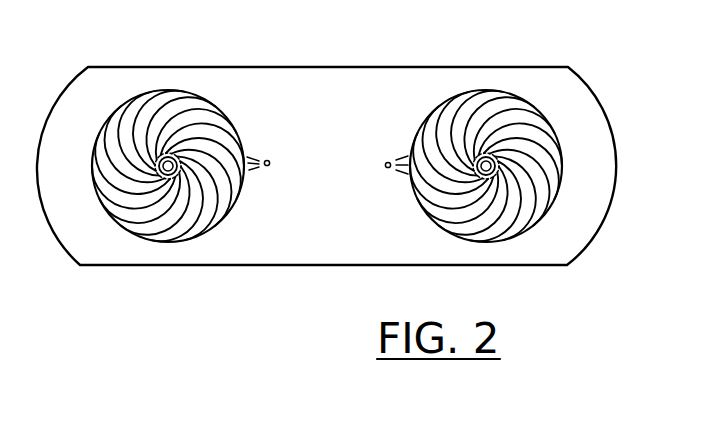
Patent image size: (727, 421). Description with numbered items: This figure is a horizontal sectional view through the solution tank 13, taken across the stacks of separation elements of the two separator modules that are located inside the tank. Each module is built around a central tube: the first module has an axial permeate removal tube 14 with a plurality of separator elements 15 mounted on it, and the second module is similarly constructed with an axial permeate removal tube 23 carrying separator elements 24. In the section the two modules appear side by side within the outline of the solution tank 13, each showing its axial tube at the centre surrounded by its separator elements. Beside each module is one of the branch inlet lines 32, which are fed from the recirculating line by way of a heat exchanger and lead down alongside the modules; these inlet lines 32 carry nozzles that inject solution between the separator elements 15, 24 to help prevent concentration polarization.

The solution tank 13 is at (597, 237).
The axial permeate removal tube 14 is at (480, 175).
The separator elements 15 is at (487, 98).
The axial permeate removal tube 23 is at (178, 174).
The separator elements 24 is at (230, 128).
The branch inlet lines 32 is at (269, 160).